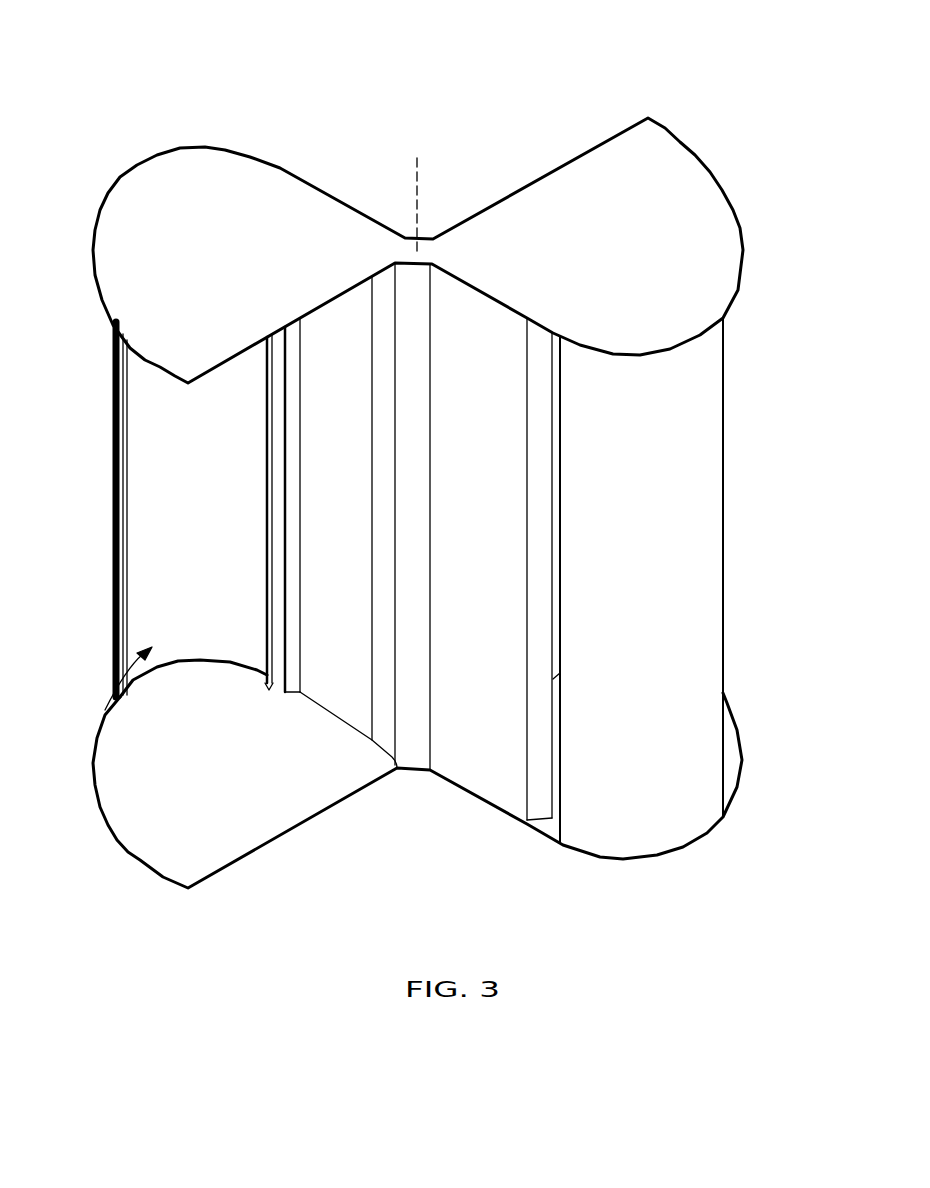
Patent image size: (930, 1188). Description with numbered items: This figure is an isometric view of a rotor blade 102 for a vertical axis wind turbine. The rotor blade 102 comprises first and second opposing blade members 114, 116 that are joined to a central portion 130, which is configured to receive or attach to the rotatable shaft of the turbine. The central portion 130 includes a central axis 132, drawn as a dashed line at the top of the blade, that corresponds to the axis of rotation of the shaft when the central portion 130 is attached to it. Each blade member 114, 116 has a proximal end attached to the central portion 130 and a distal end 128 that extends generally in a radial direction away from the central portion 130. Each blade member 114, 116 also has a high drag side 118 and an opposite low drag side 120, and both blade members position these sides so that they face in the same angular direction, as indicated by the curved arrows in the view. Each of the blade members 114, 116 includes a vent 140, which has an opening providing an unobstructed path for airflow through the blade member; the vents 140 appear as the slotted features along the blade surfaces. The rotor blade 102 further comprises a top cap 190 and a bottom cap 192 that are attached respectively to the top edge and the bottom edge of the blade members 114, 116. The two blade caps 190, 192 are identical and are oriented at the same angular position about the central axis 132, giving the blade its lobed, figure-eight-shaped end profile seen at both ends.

The rotor blade 102 is at (146, 78).
The top cap 190 is at (707, 185).
The bottom cap 192 is at (130, 827).
The central axis 132 is at (417, 170).
The first blade member 114 is at (113, 437).
The distal end 128 is at (112, 525).
The high drag side 118 is at (125, 671).
The vent 140 is at (250, 649).
The central portion 130 is at (415, 522).
The second blade member 116 is at (705, 637).
The low drag side 120 is at (697, 708).